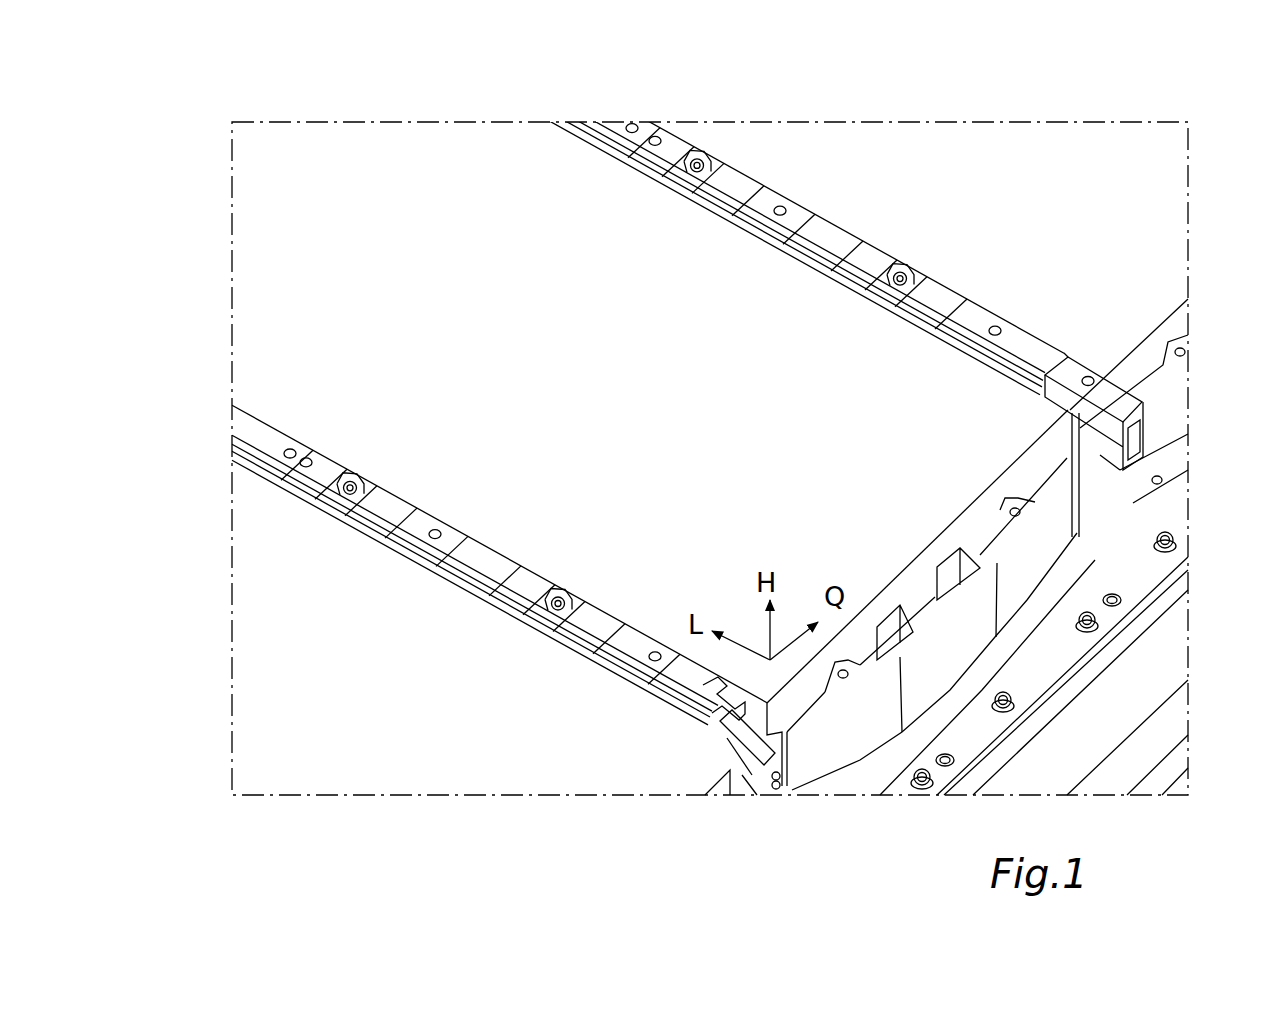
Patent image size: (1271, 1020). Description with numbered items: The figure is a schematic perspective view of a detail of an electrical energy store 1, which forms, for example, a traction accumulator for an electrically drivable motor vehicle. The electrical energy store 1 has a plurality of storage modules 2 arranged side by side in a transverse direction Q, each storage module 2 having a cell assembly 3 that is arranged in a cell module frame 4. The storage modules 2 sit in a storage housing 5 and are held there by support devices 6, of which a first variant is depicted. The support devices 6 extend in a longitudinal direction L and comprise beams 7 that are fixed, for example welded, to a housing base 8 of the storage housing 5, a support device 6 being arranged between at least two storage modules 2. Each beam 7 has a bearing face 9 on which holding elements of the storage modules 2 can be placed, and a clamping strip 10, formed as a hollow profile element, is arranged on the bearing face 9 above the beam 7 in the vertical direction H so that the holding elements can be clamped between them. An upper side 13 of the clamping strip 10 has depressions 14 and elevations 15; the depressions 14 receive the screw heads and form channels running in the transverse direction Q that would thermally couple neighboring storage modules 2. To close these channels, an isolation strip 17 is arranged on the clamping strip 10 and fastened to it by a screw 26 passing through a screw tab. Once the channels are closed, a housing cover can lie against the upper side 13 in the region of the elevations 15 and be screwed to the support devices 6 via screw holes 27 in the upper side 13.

The electrical energy store 1 is at (930, 100).
The storage modules 2 is at (400, 168).
The cell assembly 3 is at (255, 665).
The cell module frame 4 is at (1040, 543).
The storage housing 5 is at (1110, 700).
The support devices 6 is at (673, 718).
The beams 7 is at (760, 797).
The housing base 8 is at (1058, 583).
The bearing face 9 is at (1170, 488).
The clamping strips 10 is at (275, 447).
The upper side 13 is at (1082, 366).
The depressions 14 is at (1038, 333).
The elevations 15 is at (955, 318).
The isolation strip 17 is at (498, 542).
The screw 26 is at (676, 172).
The screw holes 27 is at (788, 207).